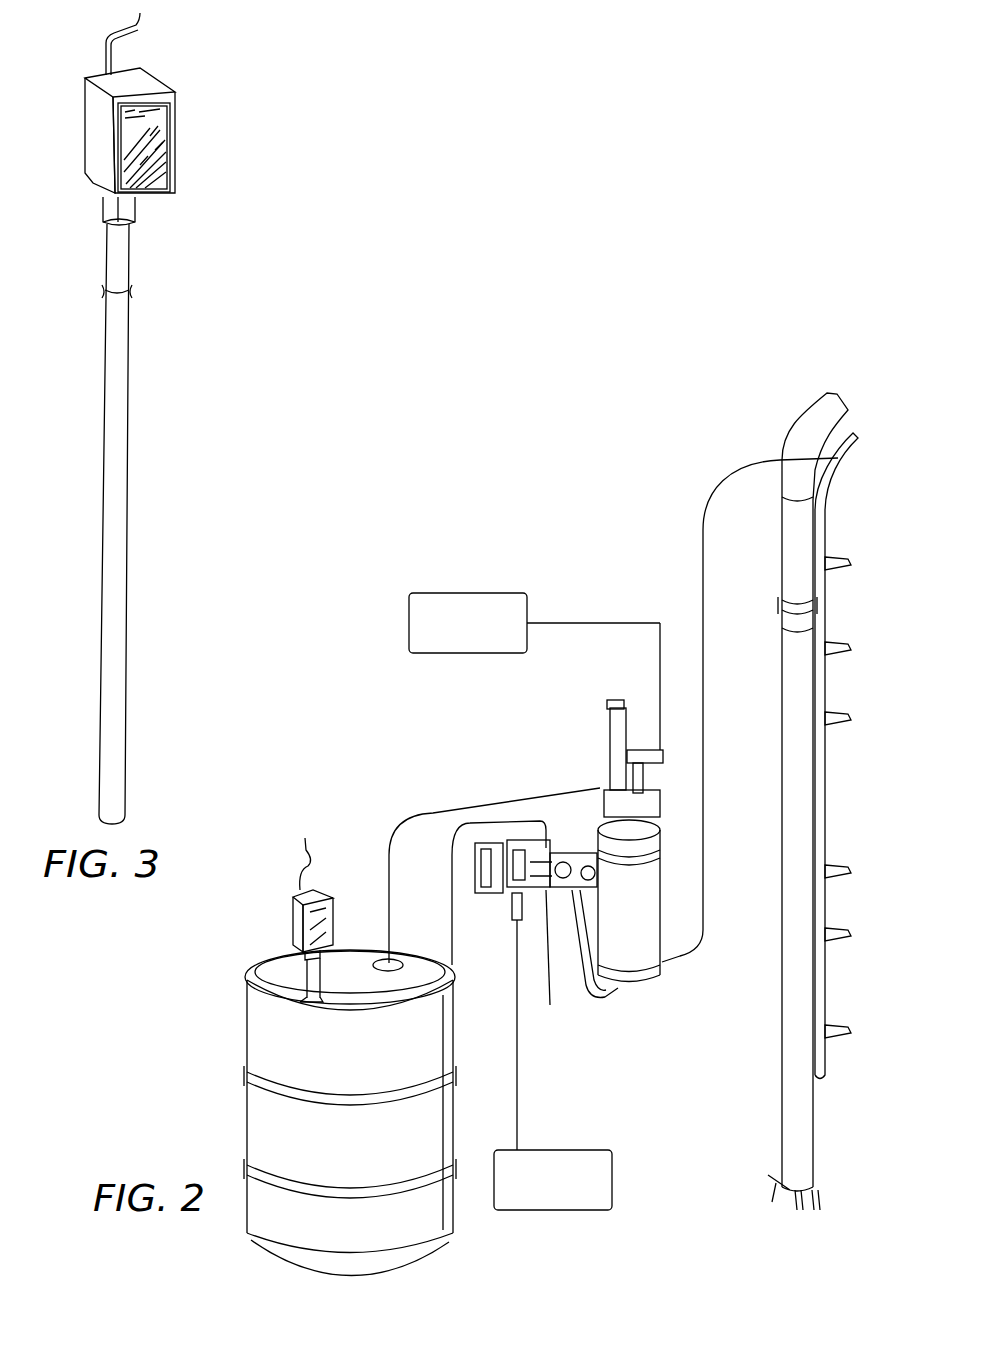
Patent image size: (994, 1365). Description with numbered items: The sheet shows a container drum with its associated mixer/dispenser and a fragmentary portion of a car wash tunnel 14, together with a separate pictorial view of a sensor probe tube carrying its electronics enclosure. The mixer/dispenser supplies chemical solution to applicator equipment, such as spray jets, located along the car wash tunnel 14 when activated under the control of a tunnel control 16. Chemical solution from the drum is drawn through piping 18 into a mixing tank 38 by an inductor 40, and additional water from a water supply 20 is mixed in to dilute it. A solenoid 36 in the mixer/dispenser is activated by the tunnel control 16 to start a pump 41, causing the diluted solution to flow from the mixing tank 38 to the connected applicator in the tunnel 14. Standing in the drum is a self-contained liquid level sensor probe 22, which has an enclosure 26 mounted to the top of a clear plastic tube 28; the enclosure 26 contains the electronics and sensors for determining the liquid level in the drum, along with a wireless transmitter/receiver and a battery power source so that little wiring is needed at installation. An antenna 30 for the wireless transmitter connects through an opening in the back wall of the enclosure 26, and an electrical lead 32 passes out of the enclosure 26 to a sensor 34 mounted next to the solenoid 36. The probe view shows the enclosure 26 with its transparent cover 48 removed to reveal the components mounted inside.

In FIG. 2, the car wash tunnel 14 is at (797, 423).
In FIG. 2, the tunnel control 16 is at (553, 1150).
In FIG. 2, the piping 18 is at (432, 810).
In FIG. 2, the water supply 20 is at (480, 593).
In FIG. 3, the liquid level sensor probe 22 is at (183, 120).
In FIG. 2, the liquid level sensor probe 22 is at (286, 898).
In FIG. 3, the enclosure 26 is at (90, 117).
In FIG. 2, the enclosure 26 is at (297, 928).
In FIG. 3, the clear plastic tube 28 is at (131, 390).
In FIG. 2, the clear plastic tube 28 is at (305, 982).
In FIG. 3, the antenna 30 is at (138, 37).
In FIG. 2, the antenna 30 is at (301, 850).
In FIG. 2, the electrical lead 32 is at (390, 990).
In FIG. 2, the sensor 34 is at (536, 1021).
In FIG. 2, the solenoid 36 is at (505, 840).
In FIG. 2, the mixing tank 38 is at (631, 1000).
In FIG. 2, the inductor 40 is at (607, 757).
In FIG. 2, the pump 41 is at (566, 855).
In FIG. 3, the transparent cover 48 is at (170, 177).